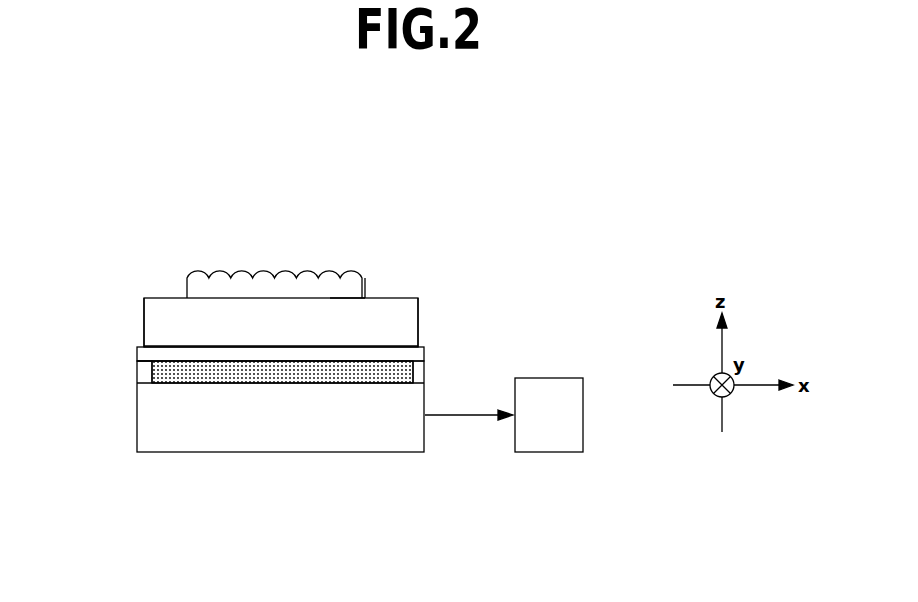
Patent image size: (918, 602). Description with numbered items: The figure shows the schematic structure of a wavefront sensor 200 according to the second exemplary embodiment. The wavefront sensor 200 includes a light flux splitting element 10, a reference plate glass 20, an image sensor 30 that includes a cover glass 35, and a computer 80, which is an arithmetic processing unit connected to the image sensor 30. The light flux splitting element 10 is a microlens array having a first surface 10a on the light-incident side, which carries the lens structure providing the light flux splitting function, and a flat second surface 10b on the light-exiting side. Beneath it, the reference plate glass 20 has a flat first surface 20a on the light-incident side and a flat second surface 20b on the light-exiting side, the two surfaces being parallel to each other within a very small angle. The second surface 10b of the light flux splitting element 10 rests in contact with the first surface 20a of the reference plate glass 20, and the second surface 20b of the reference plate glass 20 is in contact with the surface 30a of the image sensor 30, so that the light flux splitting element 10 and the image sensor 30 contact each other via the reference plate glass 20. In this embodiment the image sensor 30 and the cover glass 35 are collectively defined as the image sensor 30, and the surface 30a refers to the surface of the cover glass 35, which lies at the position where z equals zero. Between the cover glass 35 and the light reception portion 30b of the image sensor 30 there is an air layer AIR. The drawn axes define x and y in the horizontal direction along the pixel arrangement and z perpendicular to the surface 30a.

The wavefront sensor 200 is at (270, 214).
The light flux splitting element 10 is at (202, 278).
The first surface of light flux splitting element 10a is at (358, 272).
The second surface of light flux splitting element 10b is at (353, 297).
The reference plate glass 20 is at (408, 319).
The first surface of reference plate glass 20a is at (173, 297).
The second surface of reference plate glass 20b is at (175, 345).
The cover glass 35 is at (150, 353).
The image sensor 30 is at (147, 428).
The surface of image sensor 30a is at (405, 350).
The light reception portion 30b is at (295, 385).
The air layer AIR is at (185, 377).
The computer 80 is at (548, 393).